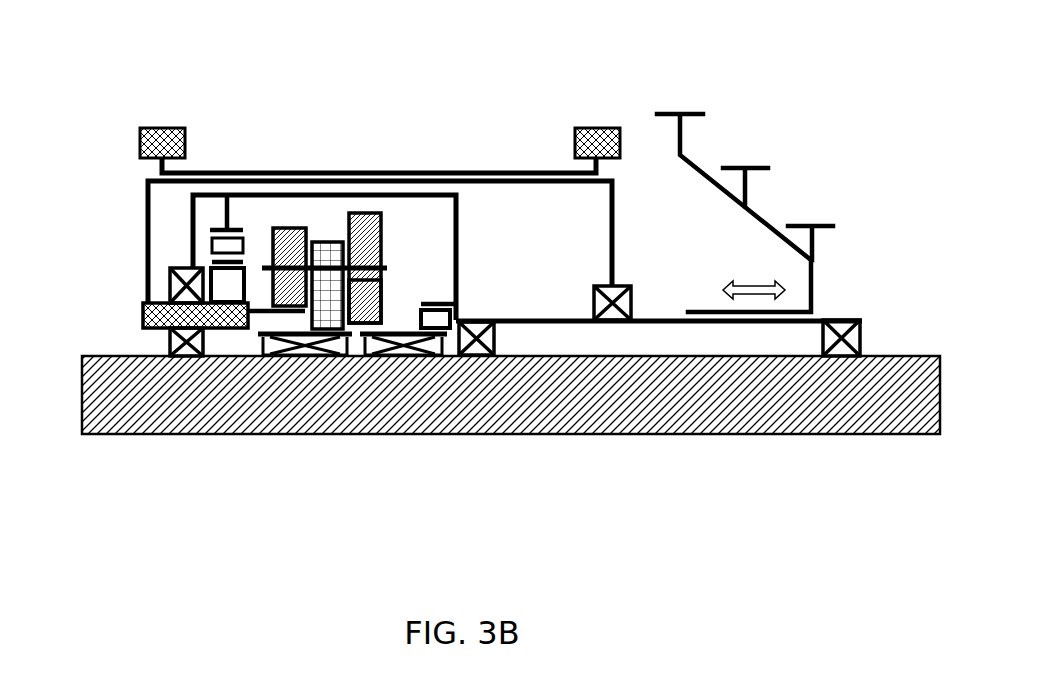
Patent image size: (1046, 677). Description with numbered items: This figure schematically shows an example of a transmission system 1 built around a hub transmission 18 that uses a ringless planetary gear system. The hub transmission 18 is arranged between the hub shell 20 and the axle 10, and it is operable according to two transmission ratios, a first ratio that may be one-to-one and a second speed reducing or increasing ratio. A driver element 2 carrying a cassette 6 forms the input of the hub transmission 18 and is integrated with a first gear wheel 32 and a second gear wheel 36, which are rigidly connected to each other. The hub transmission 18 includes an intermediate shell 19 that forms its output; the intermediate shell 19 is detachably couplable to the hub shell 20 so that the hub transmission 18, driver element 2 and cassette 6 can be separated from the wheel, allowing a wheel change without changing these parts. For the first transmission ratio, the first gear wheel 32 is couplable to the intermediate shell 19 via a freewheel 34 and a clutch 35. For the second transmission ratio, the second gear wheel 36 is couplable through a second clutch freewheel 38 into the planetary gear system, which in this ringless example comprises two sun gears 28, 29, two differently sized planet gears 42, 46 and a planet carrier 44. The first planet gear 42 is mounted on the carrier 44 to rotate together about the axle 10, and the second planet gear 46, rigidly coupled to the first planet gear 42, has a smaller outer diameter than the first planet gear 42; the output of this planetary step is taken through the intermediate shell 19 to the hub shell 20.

The transmission system 1 is at (102, 105).
The driver element 2 is at (845, 318).
The cassette 6 is at (712, 162).
The axle 10 is at (655, 438).
The hub transmission 18 is at (308, 212).
The intermediate shell 19 is at (553, 174).
The hub shell 20 is at (502, 172).
The sun gear 28 is at (414, 344).
The sun gear 29 is at (300, 337).
The first gear wheel 32 is at (287, 243).
The freewheel 34 is at (217, 243).
The clutch 35 is at (217, 285).
The second gear wheel 36 is at (367, 235).
The second clutch freewheel 38 is at (450, 325).
The first planet gear 42 is at (362, 312).
The planet carrier 44 is at (332, 272).
The second planet gear 46 is at (287, 297).